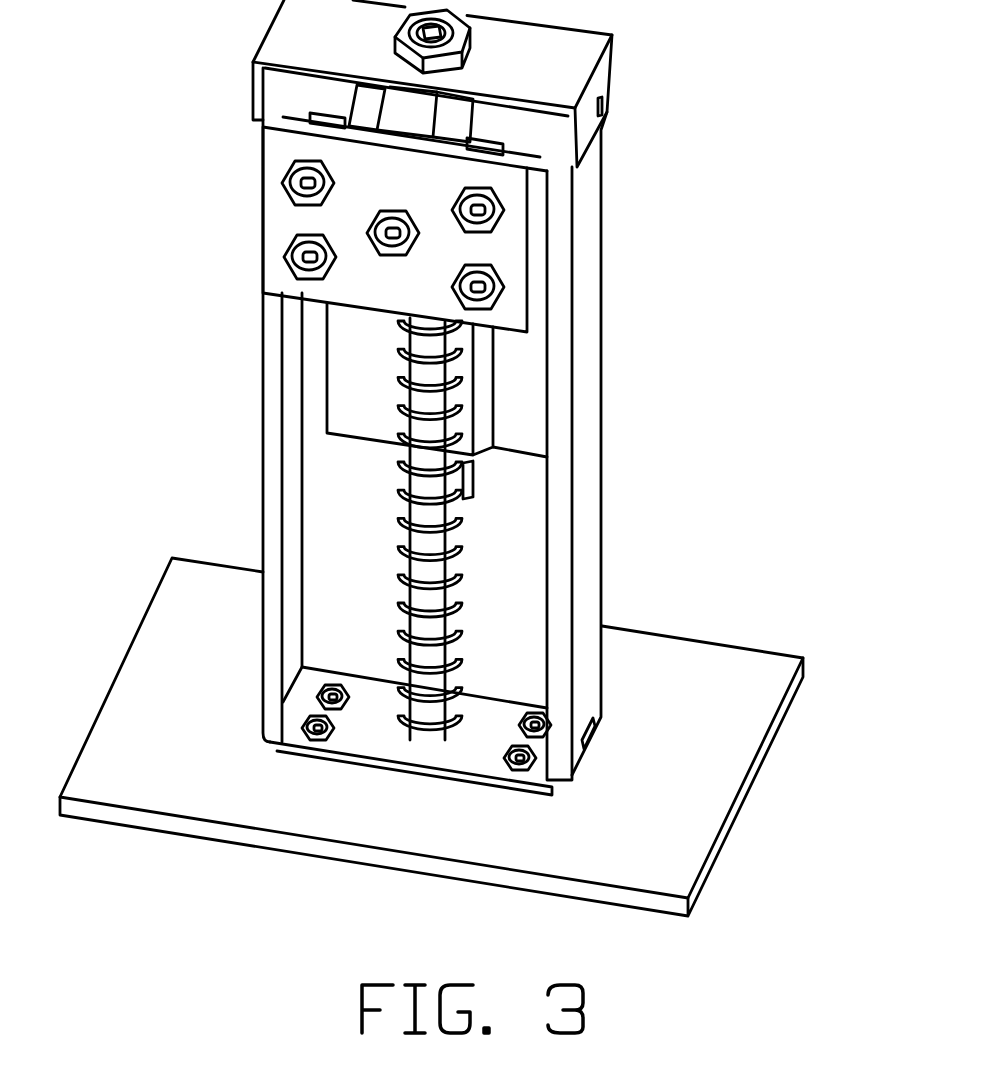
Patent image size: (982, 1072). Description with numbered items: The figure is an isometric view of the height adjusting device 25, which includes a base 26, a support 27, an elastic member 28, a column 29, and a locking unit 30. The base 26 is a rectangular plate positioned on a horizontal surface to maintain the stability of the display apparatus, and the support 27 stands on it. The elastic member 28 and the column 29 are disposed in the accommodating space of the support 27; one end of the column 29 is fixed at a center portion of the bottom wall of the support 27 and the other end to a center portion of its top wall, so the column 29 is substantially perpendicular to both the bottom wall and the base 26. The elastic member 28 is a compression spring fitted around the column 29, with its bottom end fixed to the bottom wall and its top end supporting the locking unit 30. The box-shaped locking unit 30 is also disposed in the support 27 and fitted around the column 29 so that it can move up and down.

The height adjusting device 25 is at (636, 562).
The base 26 is at (745, 663).
The support 27 is at (585, 425).
The elastic member 28 is at (455, 575).
The column 29 is at (457, 520).
The locking unit 30 is at (290, 218).